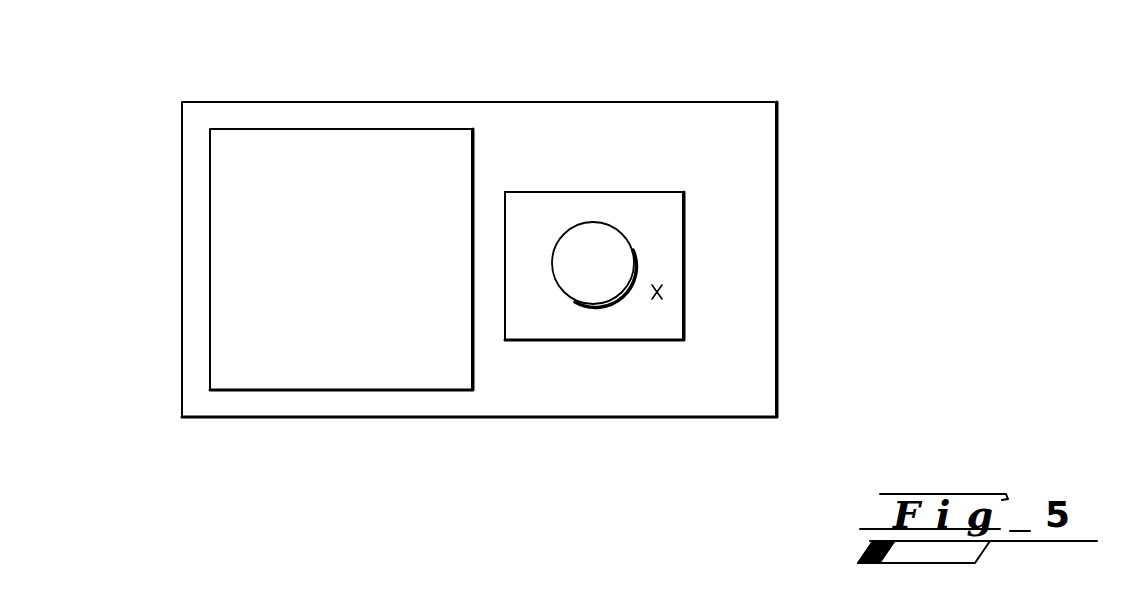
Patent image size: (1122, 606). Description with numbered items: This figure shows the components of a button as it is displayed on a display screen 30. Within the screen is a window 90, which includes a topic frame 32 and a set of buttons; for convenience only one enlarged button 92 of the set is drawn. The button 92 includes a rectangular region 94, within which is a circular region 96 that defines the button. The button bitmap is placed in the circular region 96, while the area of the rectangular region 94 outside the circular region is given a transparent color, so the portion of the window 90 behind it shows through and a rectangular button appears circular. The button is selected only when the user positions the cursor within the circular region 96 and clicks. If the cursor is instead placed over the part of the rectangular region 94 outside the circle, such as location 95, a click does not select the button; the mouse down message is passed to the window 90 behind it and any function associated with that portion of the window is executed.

The display screen 30 is at (356, 68).
The window 90 is at (250, 112).
The topic frame 32 is at (222, 192).
The button 92 is at (577, 158).
The rectangular region 94 is at (665, 215).
The location 95 is at (660, 287).
The circular region 96 is at (578, 292).